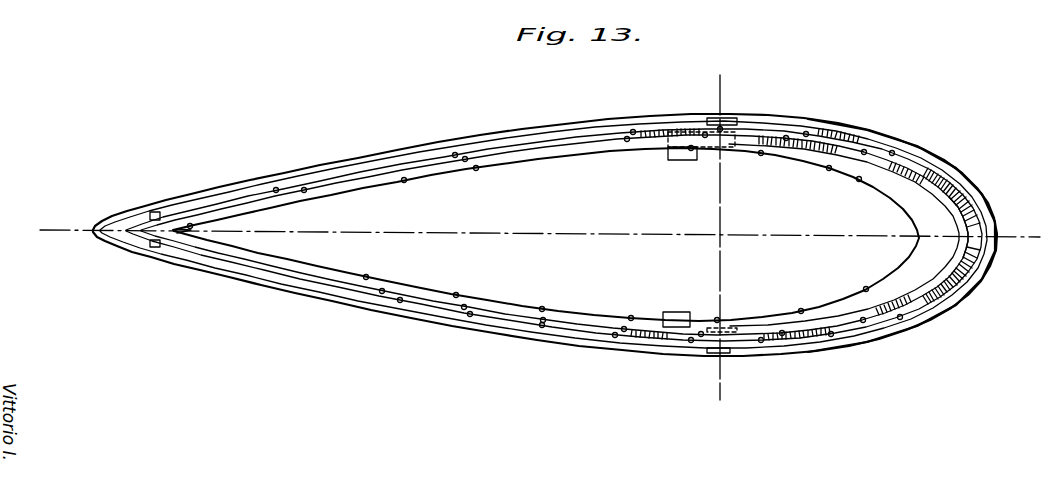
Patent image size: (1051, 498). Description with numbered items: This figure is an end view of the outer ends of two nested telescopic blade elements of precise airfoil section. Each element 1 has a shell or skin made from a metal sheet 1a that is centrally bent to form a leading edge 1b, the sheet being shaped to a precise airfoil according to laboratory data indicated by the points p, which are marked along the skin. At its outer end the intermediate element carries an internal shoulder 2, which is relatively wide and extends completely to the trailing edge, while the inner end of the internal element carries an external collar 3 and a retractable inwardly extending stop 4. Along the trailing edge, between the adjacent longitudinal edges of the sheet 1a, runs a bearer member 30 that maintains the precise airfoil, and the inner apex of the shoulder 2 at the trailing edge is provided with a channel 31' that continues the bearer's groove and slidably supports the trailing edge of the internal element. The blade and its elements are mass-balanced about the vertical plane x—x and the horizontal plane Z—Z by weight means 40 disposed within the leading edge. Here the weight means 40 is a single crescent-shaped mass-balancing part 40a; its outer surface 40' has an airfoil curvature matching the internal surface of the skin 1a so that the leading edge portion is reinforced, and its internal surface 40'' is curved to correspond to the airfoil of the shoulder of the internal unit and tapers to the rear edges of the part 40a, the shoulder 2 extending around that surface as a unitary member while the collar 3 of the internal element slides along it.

The element 1 is at (560, 145).
The metal sheet 1a is at (617, 127).
The leading edge 1b is at (990, 250).
The internal shoulder 2 is at (128, 221).
The external collar 3 is at (358, 158).
The retractable inwardly extending stop 4 is at (685, 160).
The bearer member 30 is at (157, 247).
The channel 31' is at (233, 239).
The weight means 40 is at (952, 269).
The outer surface of weight means 40' is at (874, 259).
The internal surface of weight means 40'' is at (909, 227).
The crescent-shaped mass-balancing part 40a is at (870, 150).
The points p is at (406, 181).
The vertical plane x— x is at (718, 236).
The horizontal plane Z—Z z is at (1006, 237).